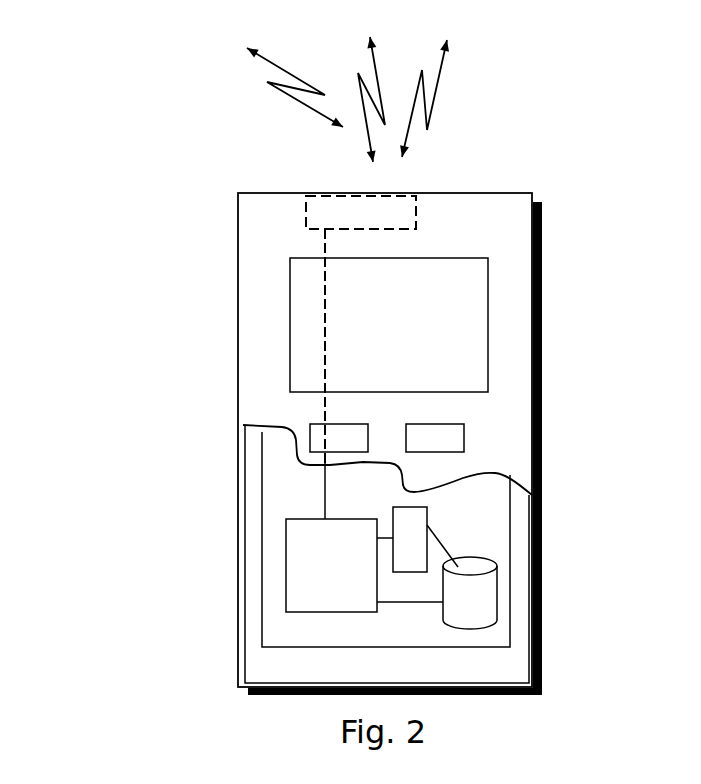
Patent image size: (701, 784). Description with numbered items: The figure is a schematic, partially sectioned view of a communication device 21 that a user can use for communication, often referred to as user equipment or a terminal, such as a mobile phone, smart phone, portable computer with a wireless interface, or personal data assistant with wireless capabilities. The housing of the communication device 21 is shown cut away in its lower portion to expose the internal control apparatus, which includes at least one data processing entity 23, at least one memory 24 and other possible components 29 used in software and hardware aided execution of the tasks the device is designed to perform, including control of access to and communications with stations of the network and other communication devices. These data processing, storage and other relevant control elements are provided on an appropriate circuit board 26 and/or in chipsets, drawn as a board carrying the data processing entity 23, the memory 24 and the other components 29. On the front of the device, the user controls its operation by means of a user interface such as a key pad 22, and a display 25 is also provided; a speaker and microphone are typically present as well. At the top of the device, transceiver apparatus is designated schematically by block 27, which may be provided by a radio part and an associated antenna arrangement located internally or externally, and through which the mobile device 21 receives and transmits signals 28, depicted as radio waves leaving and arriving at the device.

The communication device 21 is at (242, 233).
The key pad 22 is at (315, 438).
The data processing entity 23 is at (293, 549).
The memory 24 is at (465, 603).
The display 25 is at (307, 312).
The circuit board 26 is at (287, 632).
The transceiver apparatus 27 is at (313, 193).
The signals 28 is at (450, 112).
The other possible components 29 is at (410, 525).